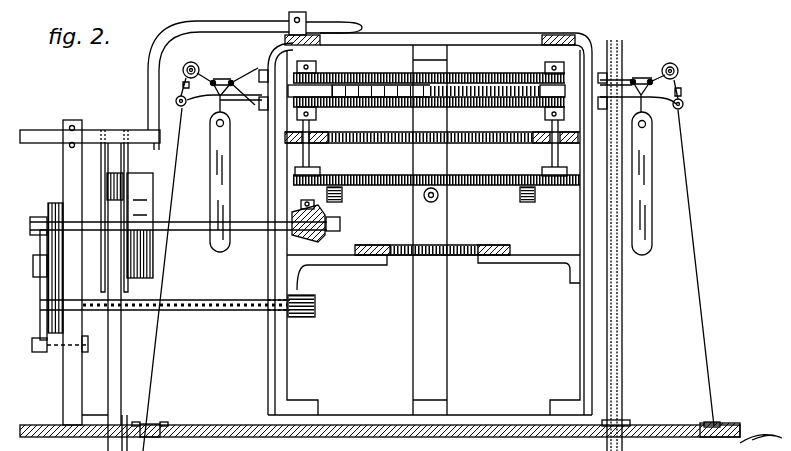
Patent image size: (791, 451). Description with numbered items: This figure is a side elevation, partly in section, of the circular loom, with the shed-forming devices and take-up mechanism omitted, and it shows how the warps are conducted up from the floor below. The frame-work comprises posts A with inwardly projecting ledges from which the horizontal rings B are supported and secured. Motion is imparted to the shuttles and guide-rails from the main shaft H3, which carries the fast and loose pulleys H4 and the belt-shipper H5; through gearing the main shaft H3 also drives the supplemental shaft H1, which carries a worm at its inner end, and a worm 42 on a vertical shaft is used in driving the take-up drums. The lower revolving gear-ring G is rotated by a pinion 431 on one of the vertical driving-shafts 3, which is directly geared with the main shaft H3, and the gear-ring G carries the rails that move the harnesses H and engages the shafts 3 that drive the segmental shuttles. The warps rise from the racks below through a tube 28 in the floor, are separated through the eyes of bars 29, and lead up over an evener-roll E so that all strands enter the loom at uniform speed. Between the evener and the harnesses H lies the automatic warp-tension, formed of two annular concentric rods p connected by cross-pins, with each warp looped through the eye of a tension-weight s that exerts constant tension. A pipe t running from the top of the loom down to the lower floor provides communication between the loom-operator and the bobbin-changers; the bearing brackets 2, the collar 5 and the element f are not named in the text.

The posts A is at (268, 348).
The rings B is at (432, 133).
The bearing brackets 2 is at (318, 73).
The driving-shafts 3 is at (310, 153).
The gear shaft 5 is at (429, 79).
The tube 28 is at (158, 426).
The bars 29 is at (688, 82).
The worm 42 is at (304, 306).
The pinion 431 is at (292, 184).
The evener-roll E is at (669, 62).
The lower revolving gear-ring G is at (436, 186).
The harnesses H is at (172, 142).
The supplemental shaft H1 is at (220, 311).
The main shaft H3 is at (258, 230).
The fast and loose pulleys H4 is at (172, 142).
The belt-shipper H5 is at (112, 137).
The annular concentric rods p is at (431, 85).
The tension-weight s is at (431, 183).
The pipe t is at (618, 245).
The lever f is at (763, 443).